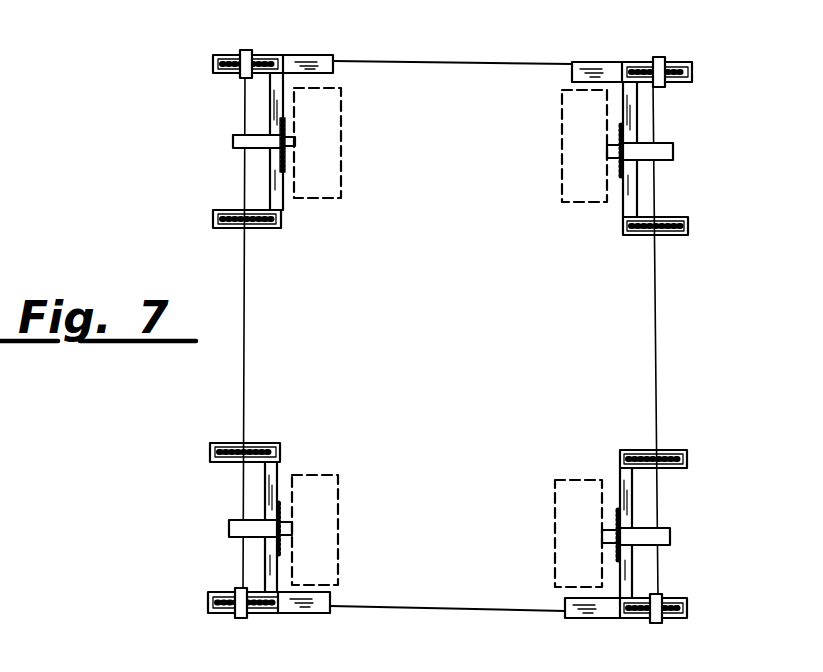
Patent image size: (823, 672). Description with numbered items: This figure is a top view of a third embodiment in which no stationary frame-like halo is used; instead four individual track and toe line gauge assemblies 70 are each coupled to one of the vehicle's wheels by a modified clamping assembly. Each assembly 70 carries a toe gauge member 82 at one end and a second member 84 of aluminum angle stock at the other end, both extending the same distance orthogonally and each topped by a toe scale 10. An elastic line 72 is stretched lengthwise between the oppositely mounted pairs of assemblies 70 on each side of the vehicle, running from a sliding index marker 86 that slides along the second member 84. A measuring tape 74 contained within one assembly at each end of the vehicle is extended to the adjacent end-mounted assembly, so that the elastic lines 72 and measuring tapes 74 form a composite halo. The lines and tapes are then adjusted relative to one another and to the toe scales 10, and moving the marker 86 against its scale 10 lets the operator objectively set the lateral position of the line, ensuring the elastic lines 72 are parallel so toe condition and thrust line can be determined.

The toe scale 10 is at (228, 56).
The track and toe line gauge (TTLG) assembly 70 is at (215, 127).
The elastic line 72 is at (245, 326).
The measuring tape 74 is at (423, 63).
The toe gauge member 82 is at (272, 230).
The second member 84 is at (322, 55).
The sliding index marker 86 is at (248, 52).